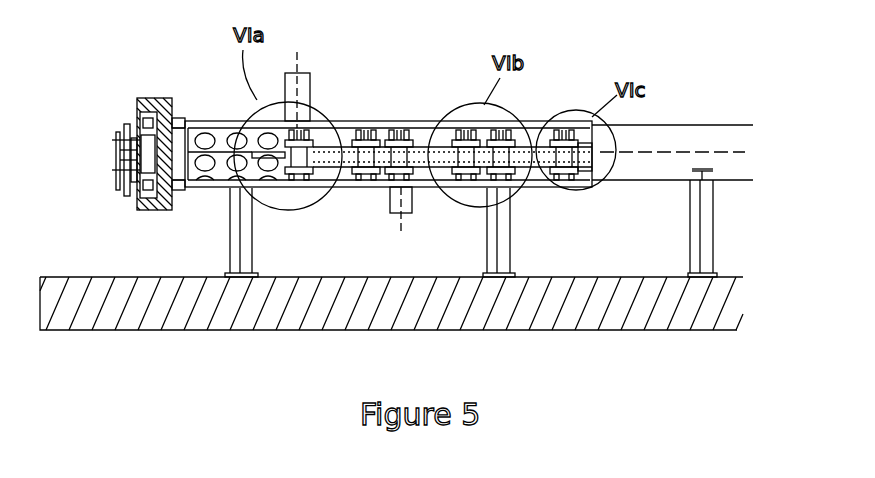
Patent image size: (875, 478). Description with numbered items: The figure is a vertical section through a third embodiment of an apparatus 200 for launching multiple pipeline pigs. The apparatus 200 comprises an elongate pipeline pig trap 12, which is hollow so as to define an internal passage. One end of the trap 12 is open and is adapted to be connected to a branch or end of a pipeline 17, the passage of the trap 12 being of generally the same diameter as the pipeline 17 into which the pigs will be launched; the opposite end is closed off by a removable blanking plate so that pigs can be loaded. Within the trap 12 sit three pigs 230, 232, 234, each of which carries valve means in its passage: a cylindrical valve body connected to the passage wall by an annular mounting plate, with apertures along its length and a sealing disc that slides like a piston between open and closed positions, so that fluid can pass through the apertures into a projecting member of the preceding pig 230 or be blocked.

The apparatus 200 is at (383, 93).
The pipeline pig trap 12 is at (427, 121).
The pipeline 17 is at (735, 140).
The pig 230 is at (537, 188).
The pig 232 is at (437, 190).
The pig 234 is at (313, 193).